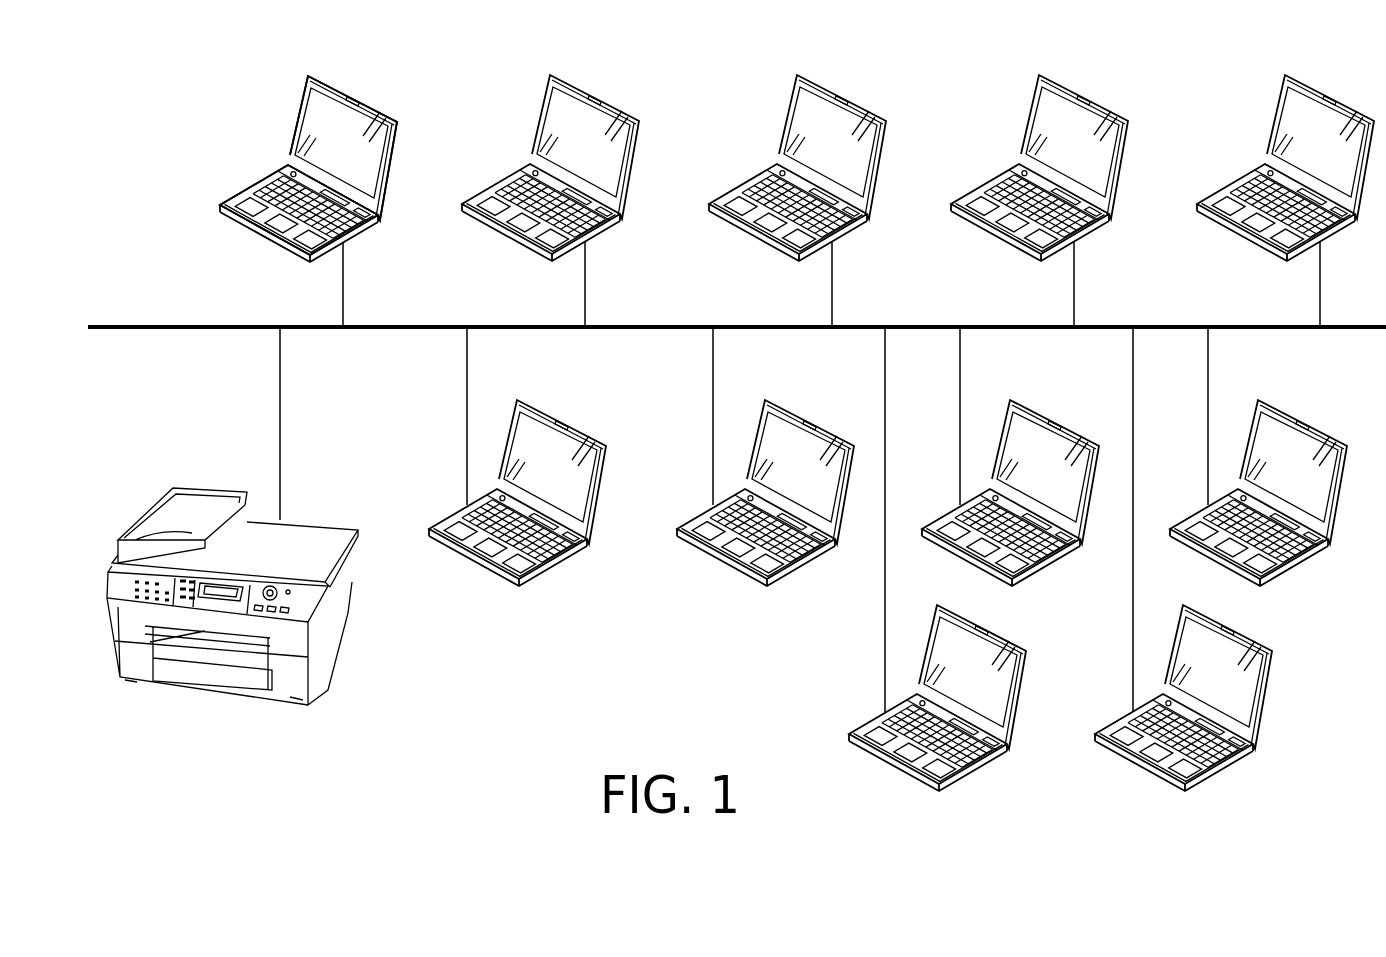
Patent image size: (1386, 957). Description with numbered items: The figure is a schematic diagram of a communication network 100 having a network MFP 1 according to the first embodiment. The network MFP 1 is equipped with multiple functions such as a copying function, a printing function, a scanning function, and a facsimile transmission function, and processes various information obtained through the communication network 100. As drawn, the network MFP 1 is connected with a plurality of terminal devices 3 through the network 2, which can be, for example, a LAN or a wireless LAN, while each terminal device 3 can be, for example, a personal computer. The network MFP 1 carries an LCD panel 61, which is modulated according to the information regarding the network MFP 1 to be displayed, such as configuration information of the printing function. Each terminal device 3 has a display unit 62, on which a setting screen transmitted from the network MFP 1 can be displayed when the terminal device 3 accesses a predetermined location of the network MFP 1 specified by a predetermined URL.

The network MFP 1 is at (242, 615).
The network 2 is at (143, 327).
The terminal device 3 is at (308, 163).
The LCD panel 61 is at (217, 601).
The display unit 62 is at (323, 113).
The communication network 100 is at (737, 441).